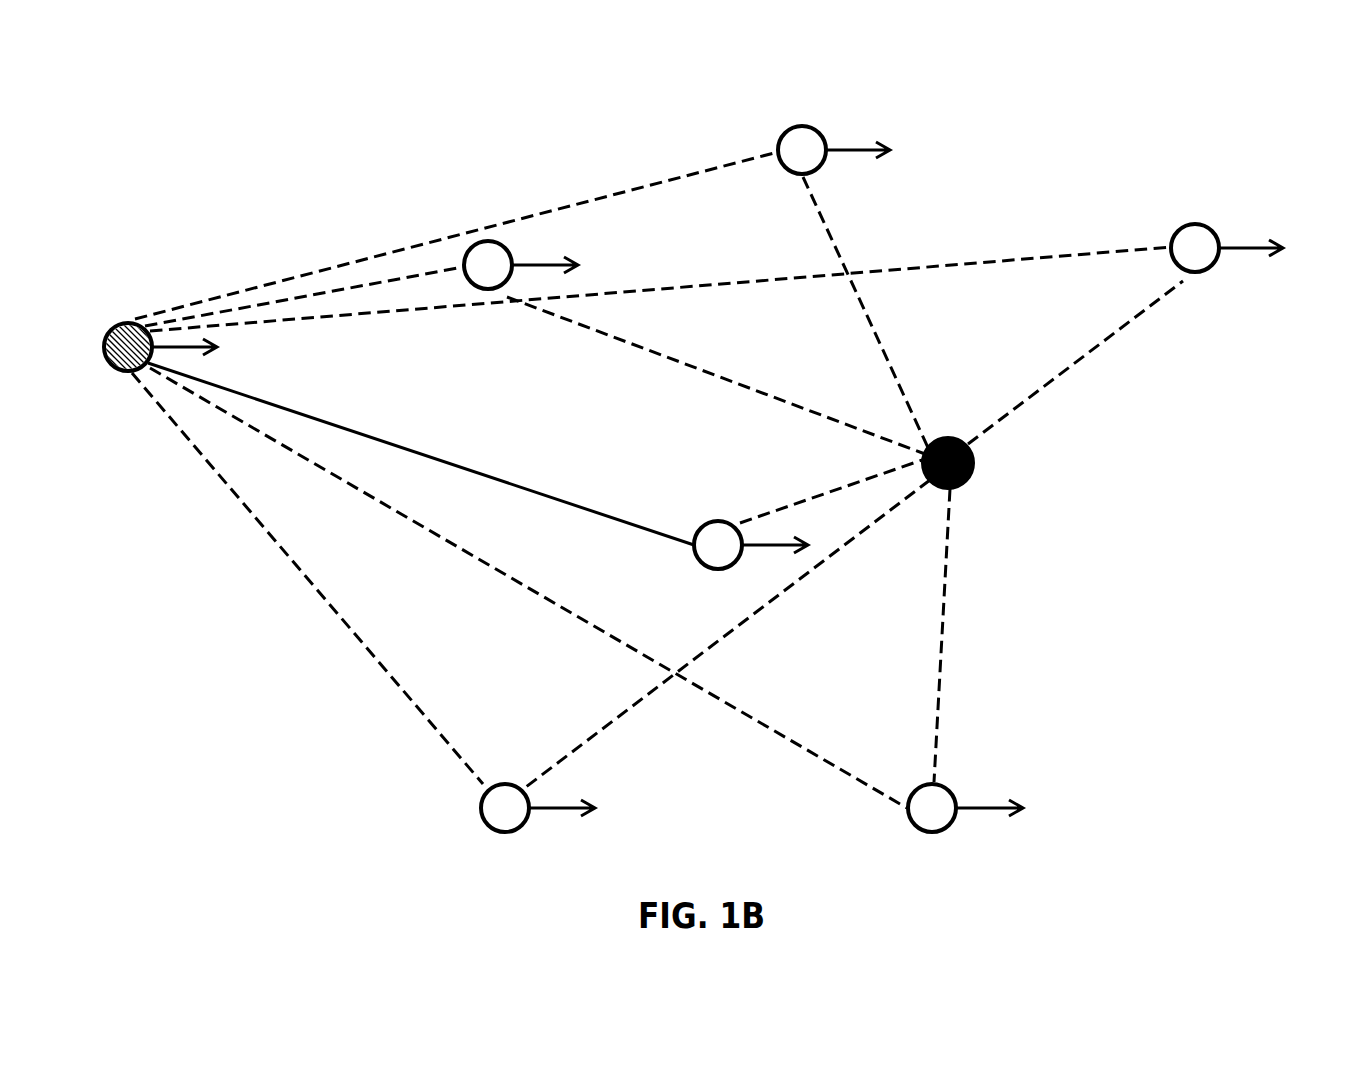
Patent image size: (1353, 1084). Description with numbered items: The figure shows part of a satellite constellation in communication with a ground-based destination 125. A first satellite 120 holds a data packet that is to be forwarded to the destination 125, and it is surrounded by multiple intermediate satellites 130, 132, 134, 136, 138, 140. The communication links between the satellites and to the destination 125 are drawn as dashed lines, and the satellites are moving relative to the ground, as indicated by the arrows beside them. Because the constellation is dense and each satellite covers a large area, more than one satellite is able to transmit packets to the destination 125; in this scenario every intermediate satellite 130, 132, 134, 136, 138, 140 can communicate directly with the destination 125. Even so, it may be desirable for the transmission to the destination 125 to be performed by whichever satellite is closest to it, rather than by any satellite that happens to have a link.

The first satellite 120 is at (112, 322).
The ground-based destination 125 is at (948, 437).
The intermediate satellite 130 is at (513, 252).
The intermediate satellite 132 is at (822, 130).
The intermediate satellite 134 is at (1215, 228).
The intermediate satellite 136 is at (708, 522).
The intermediate satellite 138 is at (500, 785).
The intermediate satellite 140 is at (950, 790).